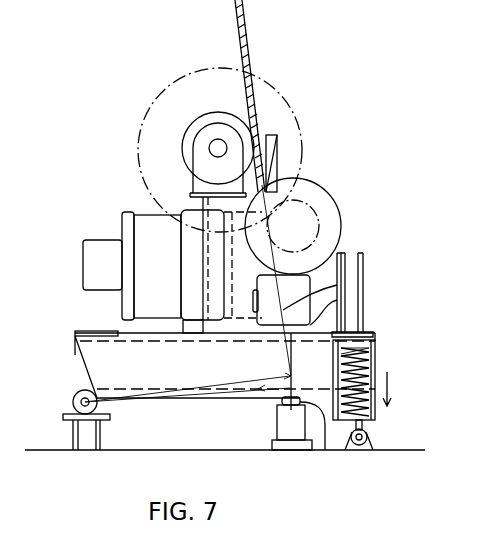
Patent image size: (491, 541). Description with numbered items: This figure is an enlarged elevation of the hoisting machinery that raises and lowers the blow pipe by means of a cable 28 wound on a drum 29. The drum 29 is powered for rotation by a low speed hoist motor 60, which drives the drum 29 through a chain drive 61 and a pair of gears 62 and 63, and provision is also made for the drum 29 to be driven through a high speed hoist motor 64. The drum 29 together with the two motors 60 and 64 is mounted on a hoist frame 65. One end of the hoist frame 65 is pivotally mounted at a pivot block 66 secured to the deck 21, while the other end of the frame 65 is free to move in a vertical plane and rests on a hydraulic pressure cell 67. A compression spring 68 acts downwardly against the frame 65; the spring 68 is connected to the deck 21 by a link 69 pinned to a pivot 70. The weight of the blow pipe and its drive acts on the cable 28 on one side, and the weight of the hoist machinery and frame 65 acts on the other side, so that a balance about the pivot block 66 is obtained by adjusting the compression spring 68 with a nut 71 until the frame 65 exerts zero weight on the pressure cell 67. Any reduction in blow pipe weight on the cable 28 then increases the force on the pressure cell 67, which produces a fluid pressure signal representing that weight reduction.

The deck 21 is at (423, 449).
The cable 28 is at (247, 20).
The drum 29 is at (192, 118).
The low speed hoist motor 60 is at (290, 302).
The chain drive 61 is at (355, 297).
The gear 62 is at (318, 185).
The gear 63 is at (288, 108).
The high speed hoist motor 64 is at (150, 222).
The hoist frame 65 is at (100, 362).
The pivot block 66 is at (68, 412).
The hydraulic pressure cell 67 is at (323, 447).
The compression spring 68 is at (370, 361).
The link 69 is at (366, 427).
The pivot 70 is at (360, 446).
The nut 71 is at (376, 344).